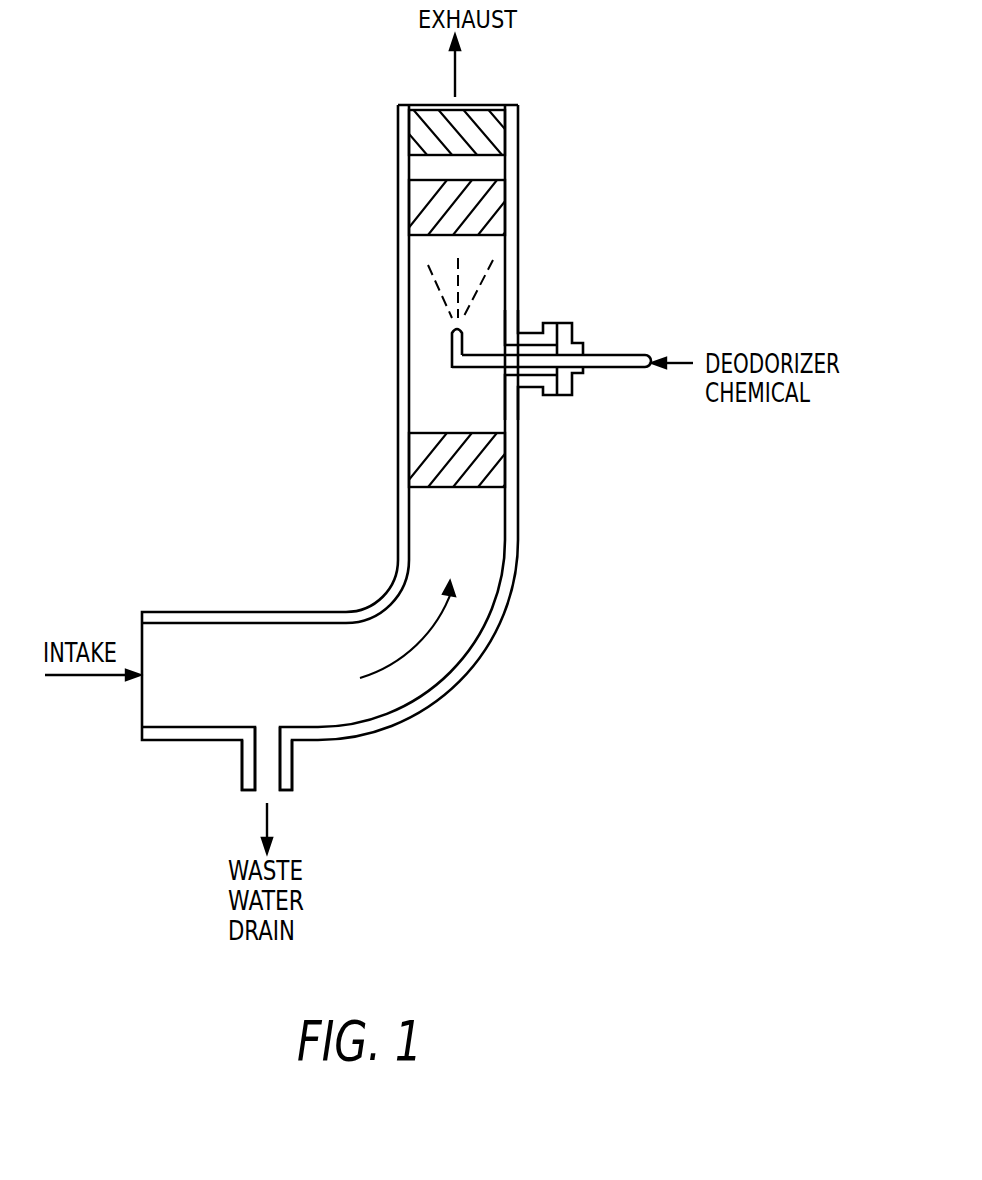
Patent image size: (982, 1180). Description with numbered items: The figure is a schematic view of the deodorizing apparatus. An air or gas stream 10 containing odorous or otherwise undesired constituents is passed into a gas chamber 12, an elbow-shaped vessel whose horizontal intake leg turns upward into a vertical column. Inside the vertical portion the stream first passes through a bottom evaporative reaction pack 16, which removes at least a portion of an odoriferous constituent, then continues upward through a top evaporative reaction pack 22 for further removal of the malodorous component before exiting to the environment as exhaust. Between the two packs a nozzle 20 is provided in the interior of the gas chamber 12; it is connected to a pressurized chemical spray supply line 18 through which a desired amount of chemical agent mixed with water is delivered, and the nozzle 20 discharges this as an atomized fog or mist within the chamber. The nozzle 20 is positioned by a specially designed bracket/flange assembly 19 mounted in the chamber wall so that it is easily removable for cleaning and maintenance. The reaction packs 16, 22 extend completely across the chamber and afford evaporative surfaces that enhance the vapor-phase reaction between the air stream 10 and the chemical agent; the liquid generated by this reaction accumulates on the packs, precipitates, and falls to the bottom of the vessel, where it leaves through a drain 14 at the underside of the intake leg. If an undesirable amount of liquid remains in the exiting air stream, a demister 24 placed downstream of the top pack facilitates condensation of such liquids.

The air or gas stream 10 is at (427, 638).
The gas chamber 12 is at (518, 582).
The drain 14 is at (290, 773).
The bottom evaporative reaction pack 16 is at (495, 470).
The chemical spray supply line 18 is at (617, 355).
The bracket/flange assembly 19 is at (573, 383).
The nozzle 20 is at (453, 331).
The top evaporative reaction pack 22 is at (497, 217).
The demister 24 is at (503, 135).